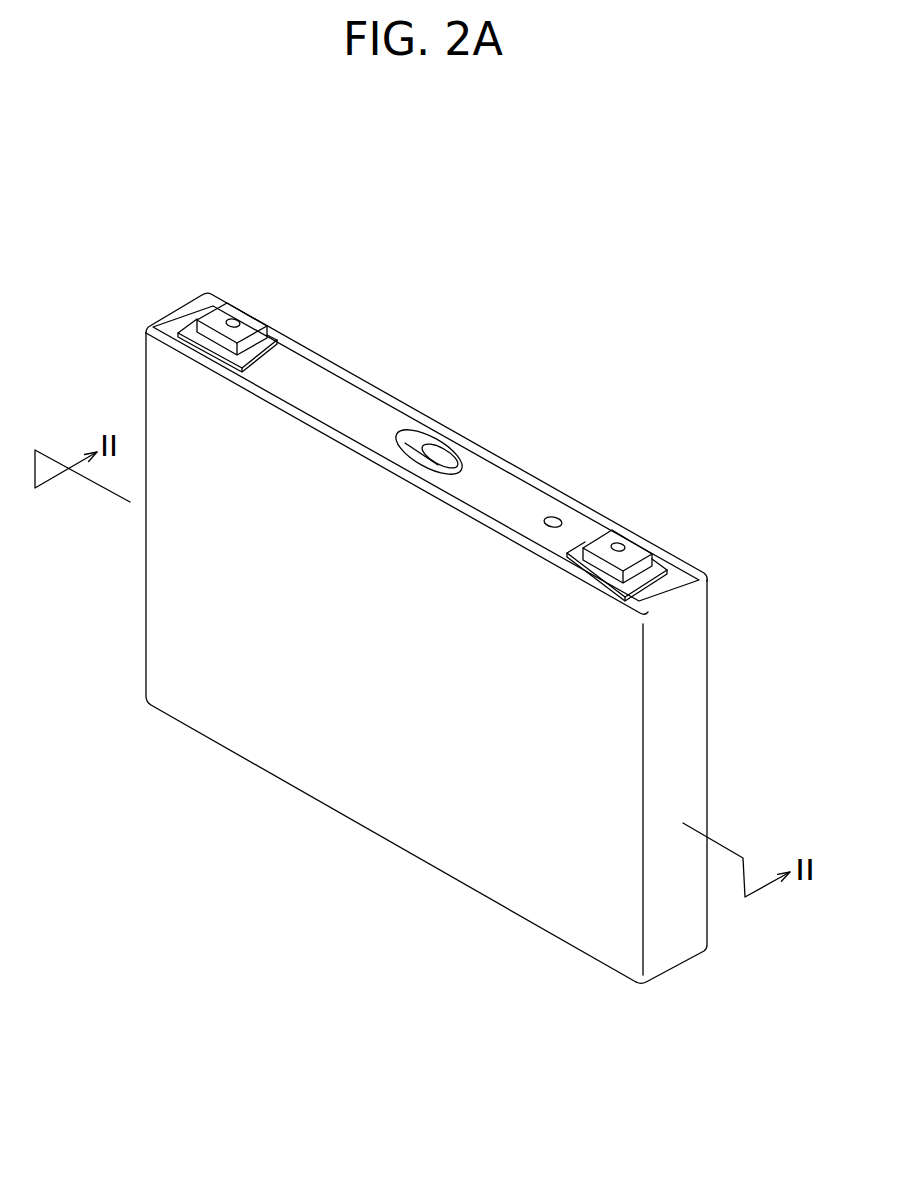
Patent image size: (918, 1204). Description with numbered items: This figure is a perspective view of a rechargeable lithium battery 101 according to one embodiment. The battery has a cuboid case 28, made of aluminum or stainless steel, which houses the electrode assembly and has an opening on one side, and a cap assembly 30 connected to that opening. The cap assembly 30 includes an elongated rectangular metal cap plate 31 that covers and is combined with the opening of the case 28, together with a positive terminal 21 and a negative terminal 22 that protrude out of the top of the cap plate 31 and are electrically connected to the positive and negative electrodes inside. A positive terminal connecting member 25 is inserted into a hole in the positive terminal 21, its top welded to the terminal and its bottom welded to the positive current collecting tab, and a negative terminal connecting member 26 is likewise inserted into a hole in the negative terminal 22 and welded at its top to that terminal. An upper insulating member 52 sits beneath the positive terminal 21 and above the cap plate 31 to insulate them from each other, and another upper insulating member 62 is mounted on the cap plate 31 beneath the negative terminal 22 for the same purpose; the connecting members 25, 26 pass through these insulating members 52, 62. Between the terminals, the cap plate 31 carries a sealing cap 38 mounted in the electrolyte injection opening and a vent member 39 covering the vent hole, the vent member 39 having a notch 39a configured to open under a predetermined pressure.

The rechargeable lithium battery 101 is at (548, 308).
The case 28 is at (360, 790).
The cap plate 31 is at (357, 410).
The cap assembly 30 is at (516, 461).
The positive terminal 21 is at (253, 318).
The negative terminal 22 is at (655, 552).
The positive terminal connecting member 25 is at (229, 318).
The negative terminal connecting member 26 is at (617, 545).
The upper insulating member 52 is at (190, 330).
The upper insulating member 62 is at (665, 553).
The sealing cap 38 is at (553, 517).
The vent member 39 is at (425, 447).
The notch 39a is at (445, 450).